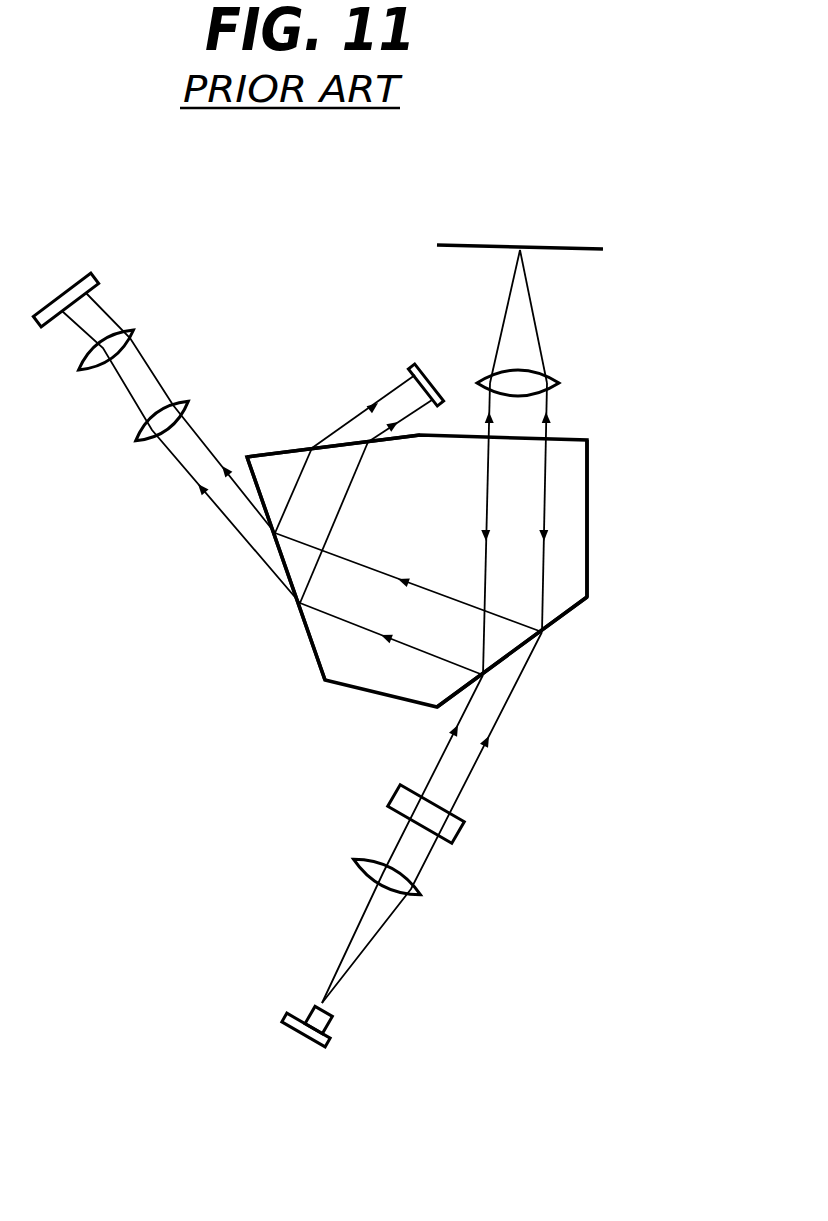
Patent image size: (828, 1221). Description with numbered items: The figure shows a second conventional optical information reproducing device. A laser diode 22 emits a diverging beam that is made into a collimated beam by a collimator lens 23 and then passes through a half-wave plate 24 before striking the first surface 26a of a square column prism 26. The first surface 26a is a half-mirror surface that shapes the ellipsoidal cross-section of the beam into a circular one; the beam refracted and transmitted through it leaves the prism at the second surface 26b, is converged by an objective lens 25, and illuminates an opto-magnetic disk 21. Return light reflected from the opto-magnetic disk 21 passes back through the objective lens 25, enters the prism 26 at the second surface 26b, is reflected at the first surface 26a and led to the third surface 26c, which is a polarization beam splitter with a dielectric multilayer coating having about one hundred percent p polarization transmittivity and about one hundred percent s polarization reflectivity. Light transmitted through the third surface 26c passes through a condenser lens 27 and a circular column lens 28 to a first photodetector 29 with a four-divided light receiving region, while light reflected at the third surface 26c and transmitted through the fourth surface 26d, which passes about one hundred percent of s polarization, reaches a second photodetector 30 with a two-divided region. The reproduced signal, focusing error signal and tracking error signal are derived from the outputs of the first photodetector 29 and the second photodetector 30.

The opto-magnetic disk 21 is at (587, 247).
The laser diode 22 is at (330, 1021).
The collimator lens 23 is at (423, 892).
The half-wave plate 24 is at (460, 832).
The objective lens 25 is at (558, 383).
The square column prism 26 is at (600, 532).
The first surface 26a is at (567, 613).
The second surface 26b is at (584, 440).
The third surface 26c is at (313, 650).
The fourth surface 26d is at (286, 452).
The condenser lens 27 is at (178, 398).
The circular column lens 28 is at (130, 333).
The first photodetector 29 is at (98, 277).
The second photodetector 30 is at (430, 374).